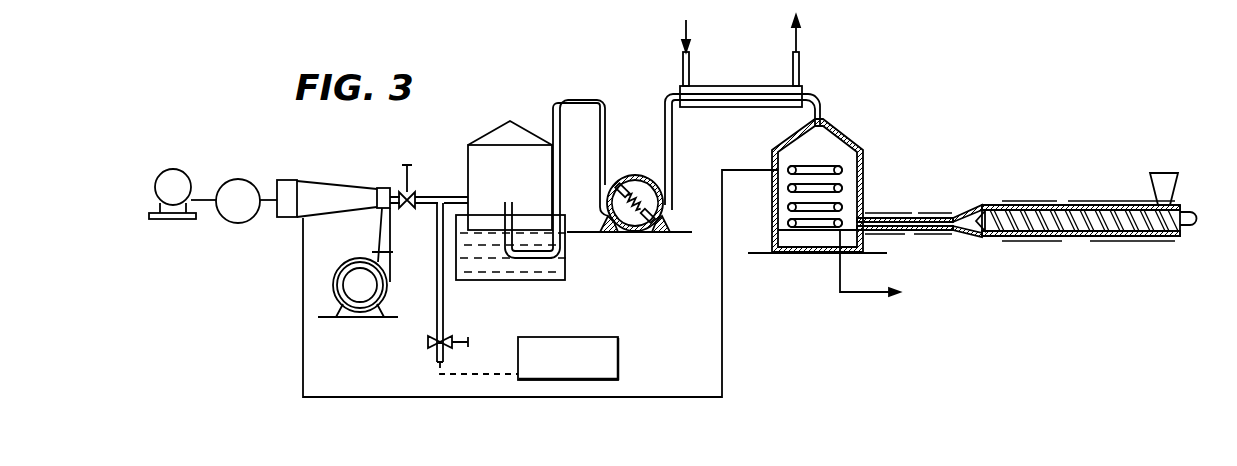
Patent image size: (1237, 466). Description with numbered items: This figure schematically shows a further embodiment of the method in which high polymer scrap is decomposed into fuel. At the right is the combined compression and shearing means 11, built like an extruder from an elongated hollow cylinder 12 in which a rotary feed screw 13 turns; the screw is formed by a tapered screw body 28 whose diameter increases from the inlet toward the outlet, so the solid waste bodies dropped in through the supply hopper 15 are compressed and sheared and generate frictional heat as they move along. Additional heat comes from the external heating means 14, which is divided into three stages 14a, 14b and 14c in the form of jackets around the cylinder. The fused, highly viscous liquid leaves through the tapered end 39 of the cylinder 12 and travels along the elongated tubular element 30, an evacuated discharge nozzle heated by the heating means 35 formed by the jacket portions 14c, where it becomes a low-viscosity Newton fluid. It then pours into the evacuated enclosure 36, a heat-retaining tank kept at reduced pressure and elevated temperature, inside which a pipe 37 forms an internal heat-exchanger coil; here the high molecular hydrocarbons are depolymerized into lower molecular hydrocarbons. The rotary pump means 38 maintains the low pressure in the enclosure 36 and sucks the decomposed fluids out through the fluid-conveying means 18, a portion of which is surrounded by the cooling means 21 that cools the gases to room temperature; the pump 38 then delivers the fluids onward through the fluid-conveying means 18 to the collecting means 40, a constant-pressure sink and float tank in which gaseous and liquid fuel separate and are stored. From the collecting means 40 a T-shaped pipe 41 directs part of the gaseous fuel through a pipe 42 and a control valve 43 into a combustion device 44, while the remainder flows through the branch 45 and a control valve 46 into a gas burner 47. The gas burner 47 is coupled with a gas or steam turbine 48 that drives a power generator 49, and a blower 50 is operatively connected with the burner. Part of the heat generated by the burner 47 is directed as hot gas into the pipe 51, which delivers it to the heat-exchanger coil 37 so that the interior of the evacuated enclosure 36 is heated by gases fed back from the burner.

The combined compression and shearing means 11 is at (1099, 216).
The elongated hollow cylinder 12 is at (1026, 205).
The rotary feed screw 13 is at (1045, 221).
The heating means 14 is at (1144, 240).
The first stage of heating means 14a is at (1107, 242).
The second stage of heating means 14b is at (1022, 243).
The third stage of heating means 14c is at (895, 205).
The supply hopper 15 is at (1170, 185).
The fluid-conveying means 18 is at (598, 87).
The cooling means 21 is at (749, 91).
The screw body 28 is at (1058, 227).
The elongated tubular element 30 is at (914, 231).
The heating means 35 is at (868, 210).
The evacuated enclosure 36 is at (850, 212).
The pipe 37 is at (808, 228).
The pump means 38 is at (647, 190).
The tapered end 39 is at (970, 228).
The collecting means 40 is at (503, 153).
The T-shaped pipe 41 is at (440, 198).
The pipe 42 is at (444, 308).
The control valve 43 is at (427, 345).
The combustion device 44 is at (583, 343).
The branch 45 is at (425, 206).
The control valve 46 is at (410, 176).
The gas burner 47 is at (352, 195).
The gas or steam turbine 48 is at (253, 177).
The power generator 49 is at (188, 171).
The blower 50 is at (352, 277).
The pipe 51 is at (303, 328).